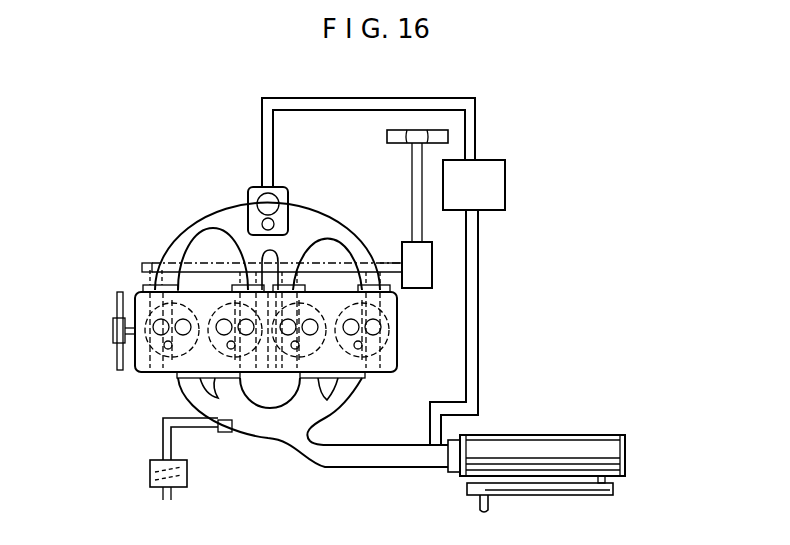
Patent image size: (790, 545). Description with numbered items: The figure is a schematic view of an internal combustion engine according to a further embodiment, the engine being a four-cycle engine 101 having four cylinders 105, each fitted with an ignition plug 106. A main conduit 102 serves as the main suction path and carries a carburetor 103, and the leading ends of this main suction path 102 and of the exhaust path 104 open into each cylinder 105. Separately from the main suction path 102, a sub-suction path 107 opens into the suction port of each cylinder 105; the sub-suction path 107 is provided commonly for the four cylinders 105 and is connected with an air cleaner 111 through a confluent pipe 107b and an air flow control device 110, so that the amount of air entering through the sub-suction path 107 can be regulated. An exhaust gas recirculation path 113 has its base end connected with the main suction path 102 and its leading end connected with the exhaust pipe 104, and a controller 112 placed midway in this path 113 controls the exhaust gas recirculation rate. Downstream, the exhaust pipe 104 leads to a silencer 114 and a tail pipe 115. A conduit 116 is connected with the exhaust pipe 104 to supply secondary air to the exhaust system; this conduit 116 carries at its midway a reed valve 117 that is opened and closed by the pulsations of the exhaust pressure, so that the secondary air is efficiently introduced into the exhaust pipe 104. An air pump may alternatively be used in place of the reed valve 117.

The four-cycle engine 101 is at (390, 360).
The main conduit 102 is at (170, 245).
The carburetor 103 is at (283, 188).
The exhaust path 104 is at (193, 393).
The cylinder 105 is at (187, 309).
The ignition plug 106 is at (167, 350).
The sub-suction path 107 is at (148, 294).
The confluent pipe 107b is at (338, 267).
The air flow control device 110 is at (430, 283).
The air cleaner 111 is at (416, 143).
The controller 112 is at (505, 188).
The exhaust gas recirculation path 113 is at (477, 128).
The silencer 114 is at (538, 443).
The tail pipe 115 is at (480, 507).
The conduit 116 is at (163, 447).
The reed valve 117 is at (153, 483).